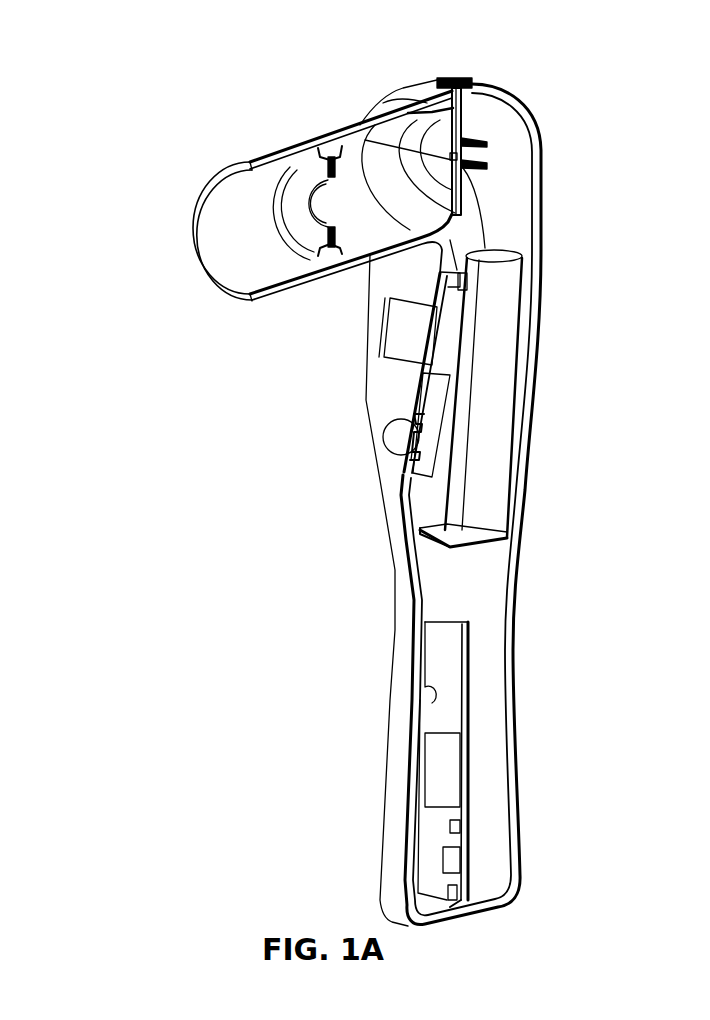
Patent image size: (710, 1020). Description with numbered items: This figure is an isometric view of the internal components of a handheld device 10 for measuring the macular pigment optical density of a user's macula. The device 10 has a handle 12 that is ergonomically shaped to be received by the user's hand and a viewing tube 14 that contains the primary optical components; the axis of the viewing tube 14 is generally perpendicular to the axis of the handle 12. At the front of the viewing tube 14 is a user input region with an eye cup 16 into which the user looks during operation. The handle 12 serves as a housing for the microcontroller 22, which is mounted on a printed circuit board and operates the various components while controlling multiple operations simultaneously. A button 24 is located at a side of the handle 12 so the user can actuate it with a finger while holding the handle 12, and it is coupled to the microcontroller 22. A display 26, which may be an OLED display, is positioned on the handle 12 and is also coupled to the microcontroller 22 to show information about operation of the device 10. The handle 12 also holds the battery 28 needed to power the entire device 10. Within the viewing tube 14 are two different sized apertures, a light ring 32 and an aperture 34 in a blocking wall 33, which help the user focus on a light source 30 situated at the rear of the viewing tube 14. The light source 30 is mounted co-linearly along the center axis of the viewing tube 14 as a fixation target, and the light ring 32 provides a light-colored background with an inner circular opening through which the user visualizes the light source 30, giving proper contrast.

The handheld device 10 is at (182, 94).
The handle 12 is at (410, 603).
The viewing tube 14 is at (305, 290).
The eye cup 16 is at (222, 283).
The microcontroller 22 is at (462, 782).
The button 24 is at (384, 450).
The display 26 is at (420, 340).
The battery 28 is at (503, 411).
The light source 30 is at (458, 158).
The light ring 32 is at (326, 156).
The blocking wall 33 is at (500, 113).
The aperture 34 is at (373, 128).